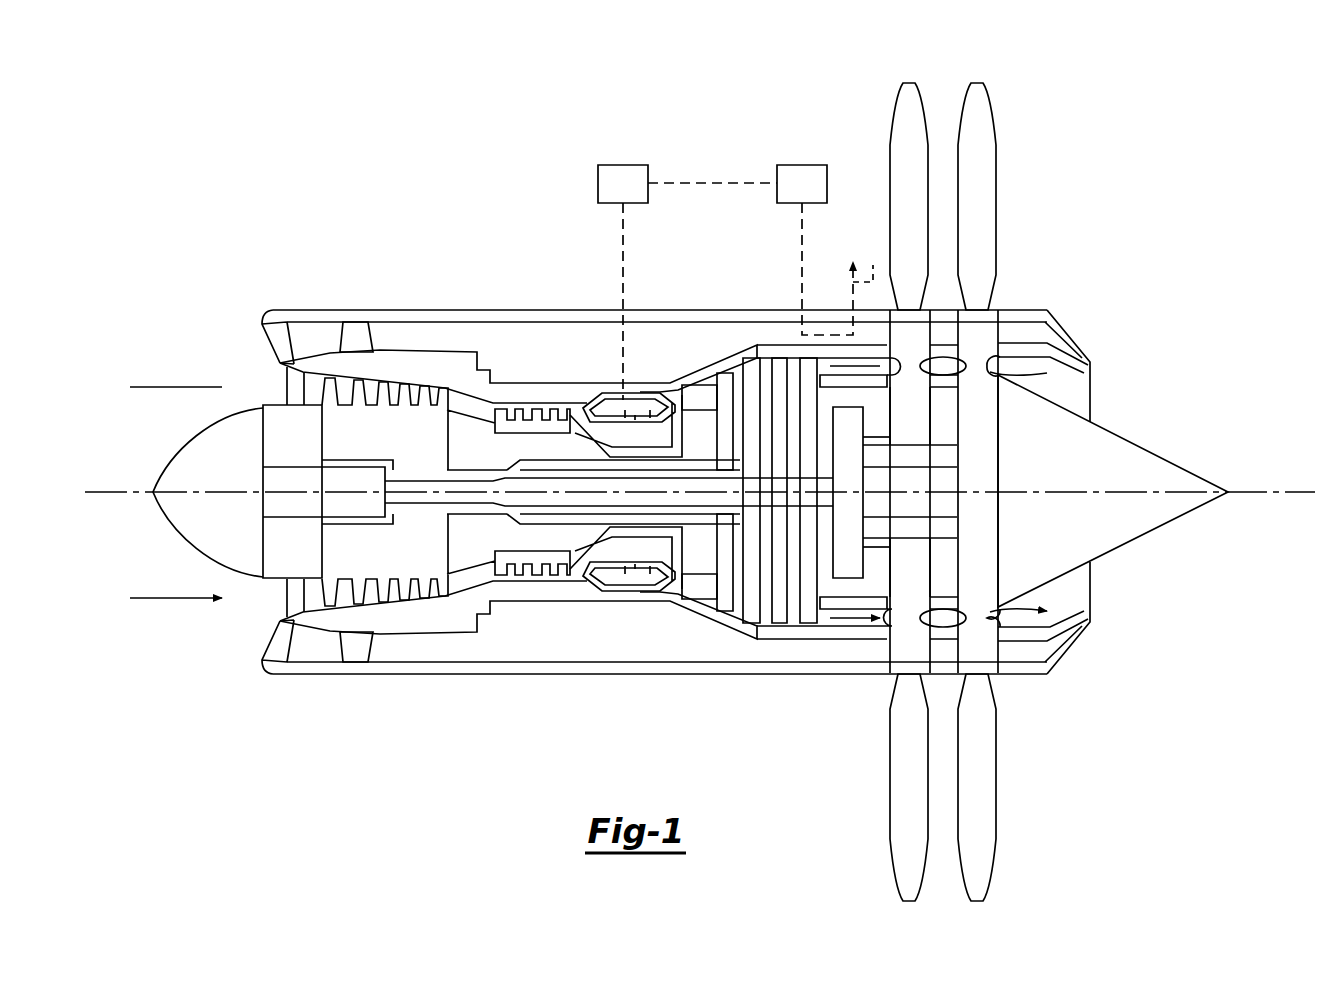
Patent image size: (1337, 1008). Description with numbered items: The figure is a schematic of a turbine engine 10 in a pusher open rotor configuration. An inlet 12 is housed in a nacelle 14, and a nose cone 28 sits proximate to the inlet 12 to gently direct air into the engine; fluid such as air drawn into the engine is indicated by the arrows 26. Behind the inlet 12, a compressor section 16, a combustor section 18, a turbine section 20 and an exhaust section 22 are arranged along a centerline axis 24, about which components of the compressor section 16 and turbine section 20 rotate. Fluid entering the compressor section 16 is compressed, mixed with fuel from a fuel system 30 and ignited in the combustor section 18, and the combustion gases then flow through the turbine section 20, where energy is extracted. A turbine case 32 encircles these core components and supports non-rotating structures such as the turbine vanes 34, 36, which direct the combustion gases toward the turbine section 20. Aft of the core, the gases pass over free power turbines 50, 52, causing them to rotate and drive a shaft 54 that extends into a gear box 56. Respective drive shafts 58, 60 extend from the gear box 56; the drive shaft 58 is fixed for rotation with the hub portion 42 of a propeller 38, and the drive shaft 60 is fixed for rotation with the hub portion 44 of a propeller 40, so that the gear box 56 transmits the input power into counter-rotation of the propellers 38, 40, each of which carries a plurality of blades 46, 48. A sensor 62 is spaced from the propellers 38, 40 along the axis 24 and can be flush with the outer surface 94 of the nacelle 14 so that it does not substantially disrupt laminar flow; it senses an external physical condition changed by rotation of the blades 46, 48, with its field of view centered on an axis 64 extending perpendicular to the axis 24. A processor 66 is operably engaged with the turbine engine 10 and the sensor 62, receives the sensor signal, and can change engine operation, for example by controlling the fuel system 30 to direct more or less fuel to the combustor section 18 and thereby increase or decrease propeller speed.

The turbine engine 10 is at (185, 290).
The inlet 12 is at (235, 626).
The nacelle 14 is at (303, 674).
The compressor section 16 is at (512, 613).
The combustor section 18 is at (612, 625).
The turbine section 20 is at (795, 539).
The exhaust section 22 is at (1075, 665).
The centerline axis 24 is at (1255, 488).
The arrows indicating fluid drawn into the engine 26 is at (155, 385).
The nose cone 28 is at (205, 452).
The fuel system 30 is at (610, 196).
The turbine case 32 is at (430, 355).
The turbine vane 34 is at (700, 390).
The turbine vane 36 is at (700, 593).
The propeller 38 is at (888, 480).
The propeller 40 is at (1016, 480).
The hub portion 42 is at (897, 647).
The hub portion 44 is at (987, 652).
The blades 46 is at (903, 103).
The blades 48 is at (985, 103).
The free power turbine 50 is at (781, 623).
The free power turbine 52 is at (808, 623).
The shaft 54 is at (825, 508).
The gear box 56 is at (858, 472).
The drive shaft 58 is at (883, 441).
The drive shaft 60 is at (940, 510).
The sensor 62 is at (852, 312).
The axis 64 is at (869, 257).
The processor 66 is at (789, 196).
The outer surface 94 is at (543, 310).